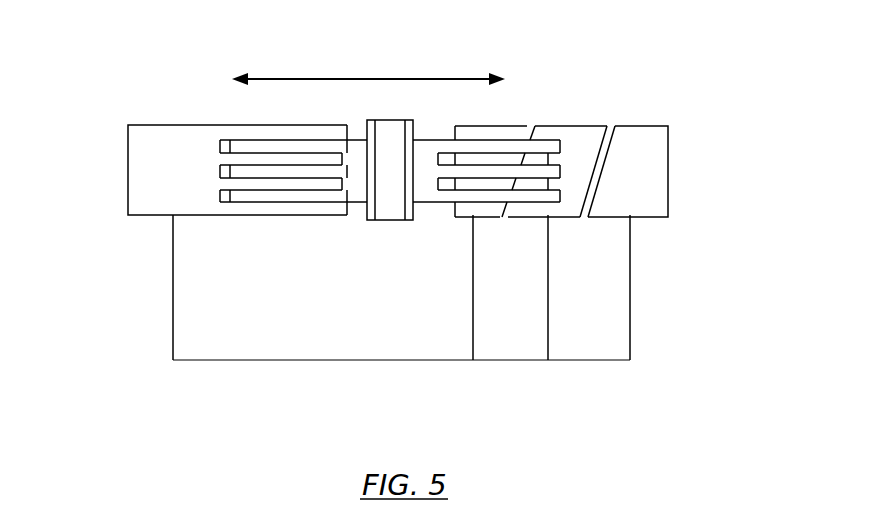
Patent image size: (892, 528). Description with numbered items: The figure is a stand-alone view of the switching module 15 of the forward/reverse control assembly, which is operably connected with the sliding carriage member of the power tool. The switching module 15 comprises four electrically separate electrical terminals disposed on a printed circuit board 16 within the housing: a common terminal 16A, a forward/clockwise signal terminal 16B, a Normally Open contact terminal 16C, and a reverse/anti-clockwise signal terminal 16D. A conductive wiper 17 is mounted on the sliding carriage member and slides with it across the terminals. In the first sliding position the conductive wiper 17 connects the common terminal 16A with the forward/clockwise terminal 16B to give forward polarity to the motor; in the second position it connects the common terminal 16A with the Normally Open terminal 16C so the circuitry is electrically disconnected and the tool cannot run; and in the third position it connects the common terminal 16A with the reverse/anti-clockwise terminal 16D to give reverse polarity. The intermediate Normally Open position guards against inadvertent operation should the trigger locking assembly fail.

The switching module 15 is at (133, 333).
The printed circuit board 16 is at (630, 285).
The common terminal 16A is at (180, 162).
The forward/clockwise signal terminal 16B is at (498, 127).
The Normally Open contact terminal 16C is at (577, 127).
The reverse/anti-clockwise signal terminal 16D is at (647, 128).
The conductive wiper 17 is at (387, 197).